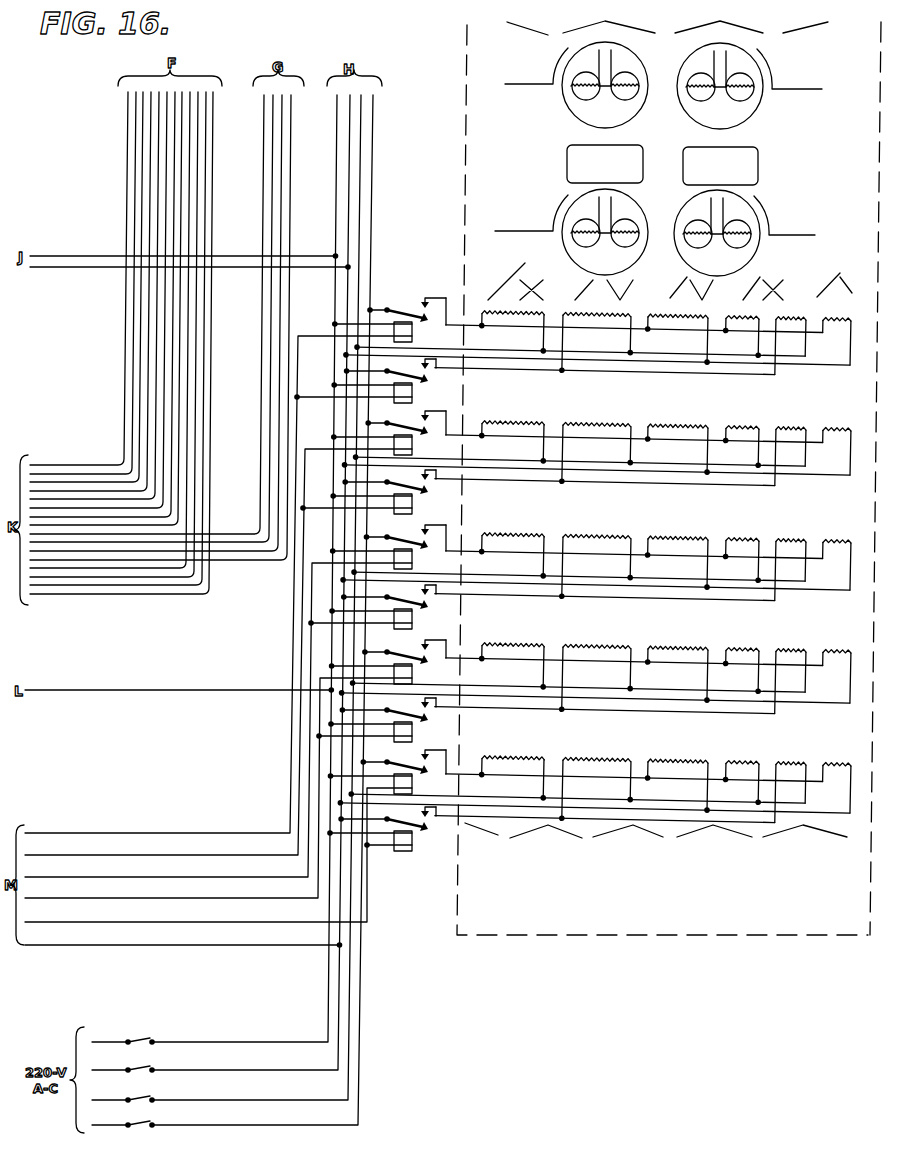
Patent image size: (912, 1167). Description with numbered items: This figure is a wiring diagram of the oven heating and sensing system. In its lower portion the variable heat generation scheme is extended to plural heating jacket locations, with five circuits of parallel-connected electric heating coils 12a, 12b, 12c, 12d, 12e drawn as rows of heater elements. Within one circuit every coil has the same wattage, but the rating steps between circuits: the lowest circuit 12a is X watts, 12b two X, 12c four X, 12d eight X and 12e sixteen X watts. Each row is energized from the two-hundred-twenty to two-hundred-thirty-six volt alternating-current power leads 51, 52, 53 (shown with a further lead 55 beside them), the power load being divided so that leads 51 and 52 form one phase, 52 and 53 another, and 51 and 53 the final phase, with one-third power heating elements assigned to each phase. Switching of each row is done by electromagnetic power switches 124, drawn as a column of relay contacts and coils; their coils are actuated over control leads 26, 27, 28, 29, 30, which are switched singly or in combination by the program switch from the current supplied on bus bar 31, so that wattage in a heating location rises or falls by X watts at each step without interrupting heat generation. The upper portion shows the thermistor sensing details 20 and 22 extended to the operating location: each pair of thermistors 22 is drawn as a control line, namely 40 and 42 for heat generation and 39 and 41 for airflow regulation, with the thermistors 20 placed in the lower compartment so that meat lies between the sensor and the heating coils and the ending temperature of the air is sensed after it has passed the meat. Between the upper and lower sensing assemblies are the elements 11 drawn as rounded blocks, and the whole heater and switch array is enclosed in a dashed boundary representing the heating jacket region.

The heating unit 11 is at (628, 152).
The electric heating coil circuit 12a is at (515, 758).
The electric heating coil circuit 12b is at (505, 645).
The electric heating coil circuit 12c is at (503, 535).
The electric heating coil circuit 12d is at (522, 423).
The electric heating coil circuit 12e is at (522, 312).
The thermistor 20 is at (575, 243).
The pair of thermistors 22 is at (572, 193).
The control lead 26 is at (216, 923).
The control lead 27 is at (132, 900).
The control lead 28 is at (196, 879).
The control lead 29 is at (126, 856).
The control lead 30 is at (170, 836).
The bus bar 31 is at (146, 947).
The control line 39 is at (813, 207).
The control line 40 is at (534, 82).
The control line 41 is at (803, 65).
The control line 42 is at (513, 224).
The power lead 51 is at (216, 1127).
The power lead 52 is at (235, 1101).
The power lead 53 is at (245, 1072).
The power lead 55 is at (215, 1040).
The electromagnetic power switch 124 is at (412, 337).